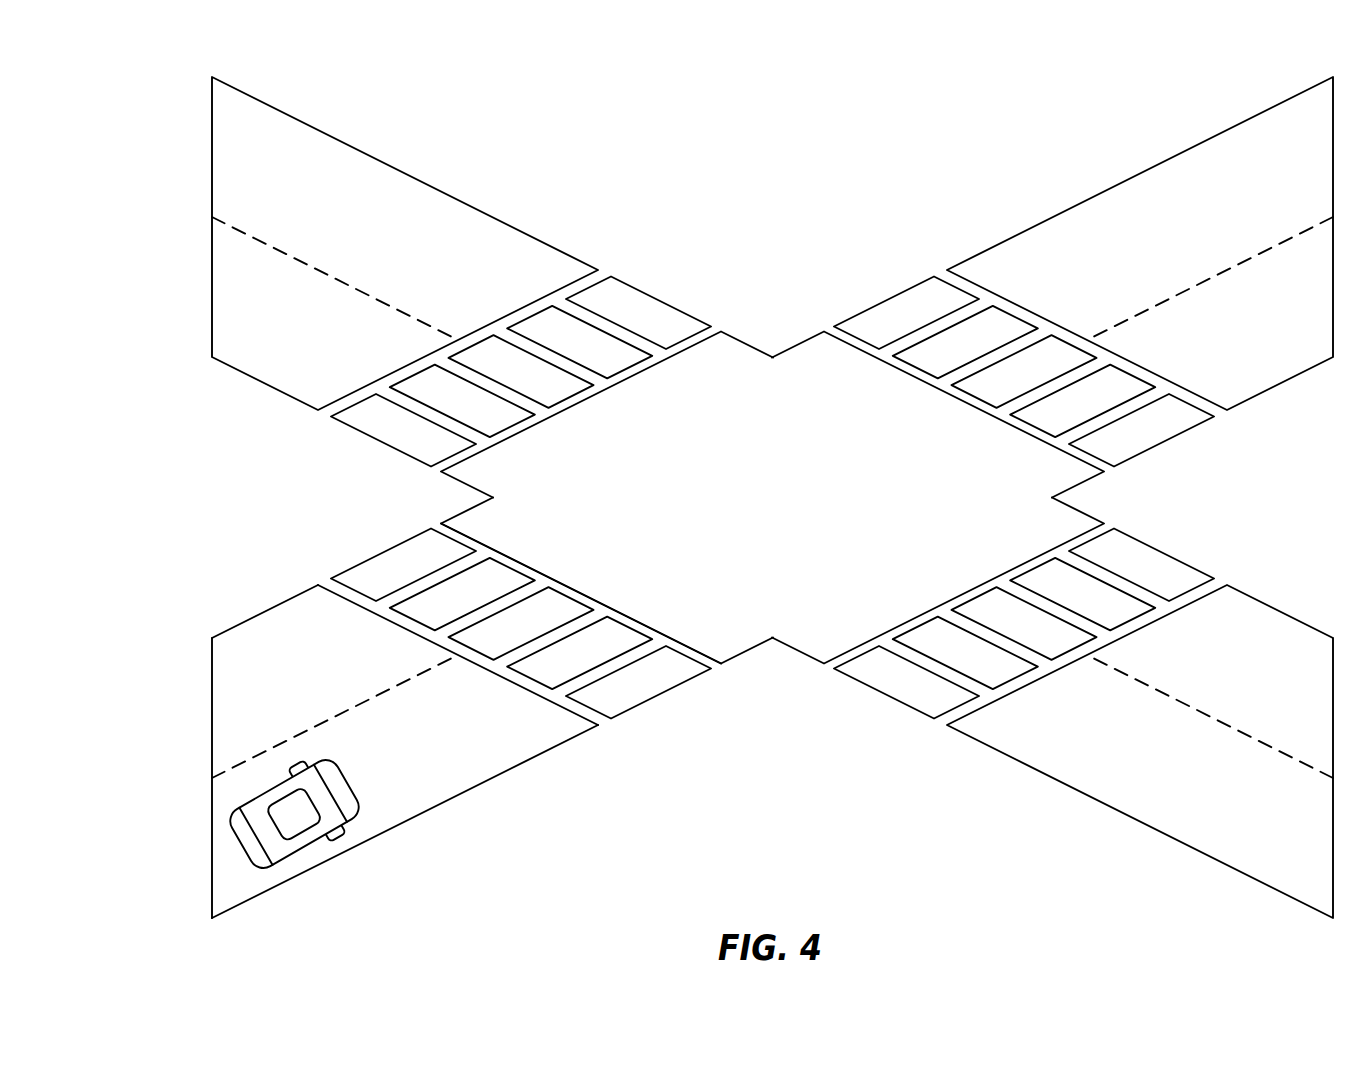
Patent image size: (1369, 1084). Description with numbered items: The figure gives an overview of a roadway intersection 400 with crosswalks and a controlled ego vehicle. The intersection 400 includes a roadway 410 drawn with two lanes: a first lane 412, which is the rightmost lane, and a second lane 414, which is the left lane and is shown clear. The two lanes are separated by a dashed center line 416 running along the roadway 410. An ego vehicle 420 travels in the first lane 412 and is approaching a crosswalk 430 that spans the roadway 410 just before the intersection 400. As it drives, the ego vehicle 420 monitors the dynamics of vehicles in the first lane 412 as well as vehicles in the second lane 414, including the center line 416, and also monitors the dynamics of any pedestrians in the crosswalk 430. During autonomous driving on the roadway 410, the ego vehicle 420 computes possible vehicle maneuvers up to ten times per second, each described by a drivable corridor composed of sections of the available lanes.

The roadway intersection 400 is at (400, 113).
The roadway 410 is at (140, 637).
The first lane 412 is at (207, 781).
The second lane 414 is at (207, 637).
The center line 416 is at (423, 673).
The ego vehicle 420 is at (308, 846).
The crosswalk 430 is at (670, 690).